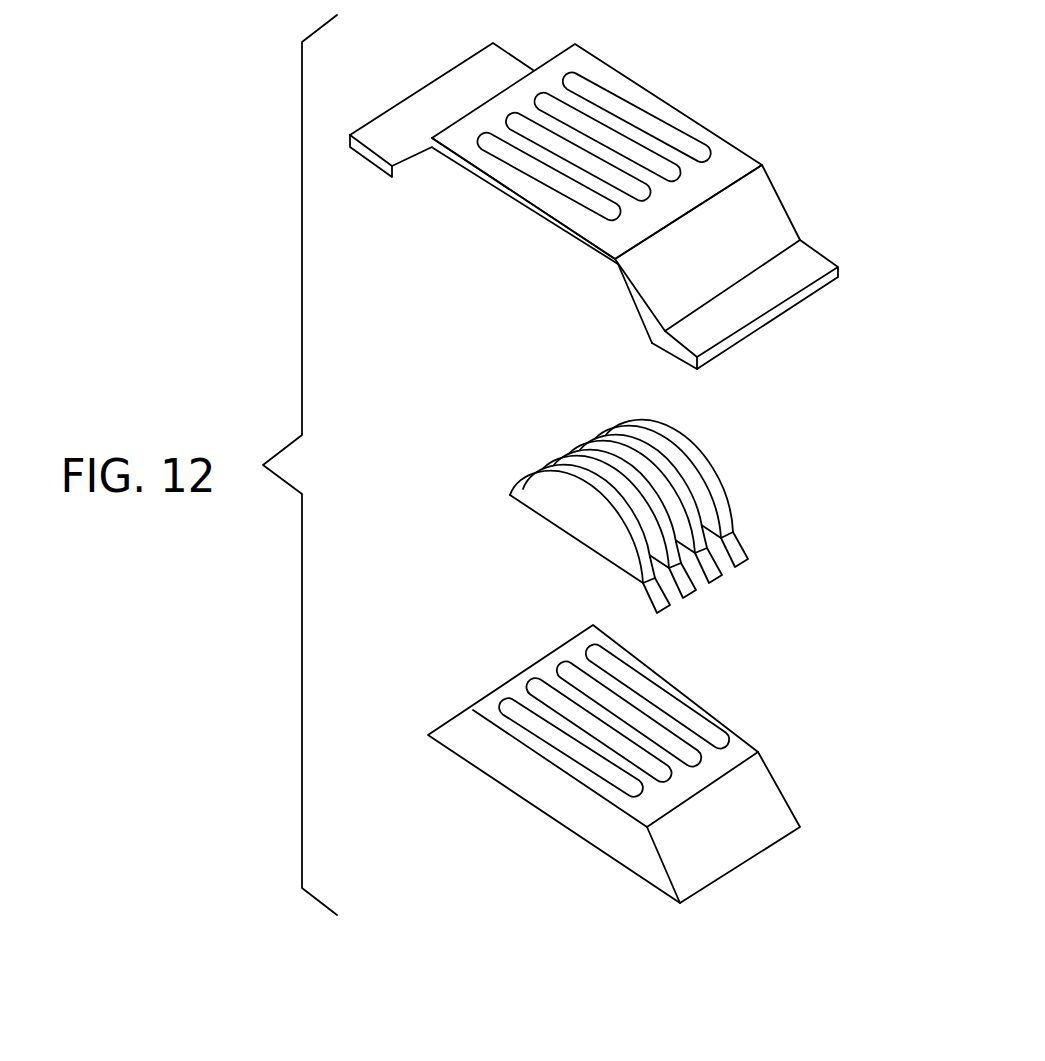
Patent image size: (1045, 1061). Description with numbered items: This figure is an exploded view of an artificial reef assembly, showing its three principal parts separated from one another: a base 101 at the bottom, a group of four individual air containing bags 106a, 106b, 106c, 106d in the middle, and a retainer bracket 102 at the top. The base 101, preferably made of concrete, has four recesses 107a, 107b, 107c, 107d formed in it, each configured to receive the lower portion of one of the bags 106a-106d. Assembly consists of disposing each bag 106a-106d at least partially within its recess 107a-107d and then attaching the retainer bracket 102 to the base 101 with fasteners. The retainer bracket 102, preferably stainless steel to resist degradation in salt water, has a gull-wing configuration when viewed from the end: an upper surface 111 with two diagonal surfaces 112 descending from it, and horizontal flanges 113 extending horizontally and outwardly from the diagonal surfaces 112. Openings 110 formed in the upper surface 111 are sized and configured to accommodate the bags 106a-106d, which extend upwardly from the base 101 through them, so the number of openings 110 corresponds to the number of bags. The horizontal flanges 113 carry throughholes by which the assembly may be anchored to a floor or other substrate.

The base 101 is at (538, 787).
The retainer bracket 102 is at (463, 173).
The air containing bag 106a is at (706, 483).
The air containing bag 106b is at (720, 576).
The air containing bag 106c is at (697, 597).
The air containing bag 106d is at (532, 495).
The recess 107a is at (710, 720).
The recess 107b is at (718, 777).
The recess 107c is at (523, 684).
The recess 107d is at (627, 803).
The opening 110 is at (618, 93).
The upper surface 111 is at (575, 218).
The diagonal surface 112 is at (780, 217).
The horizontal flange 113 is at (457, 87).